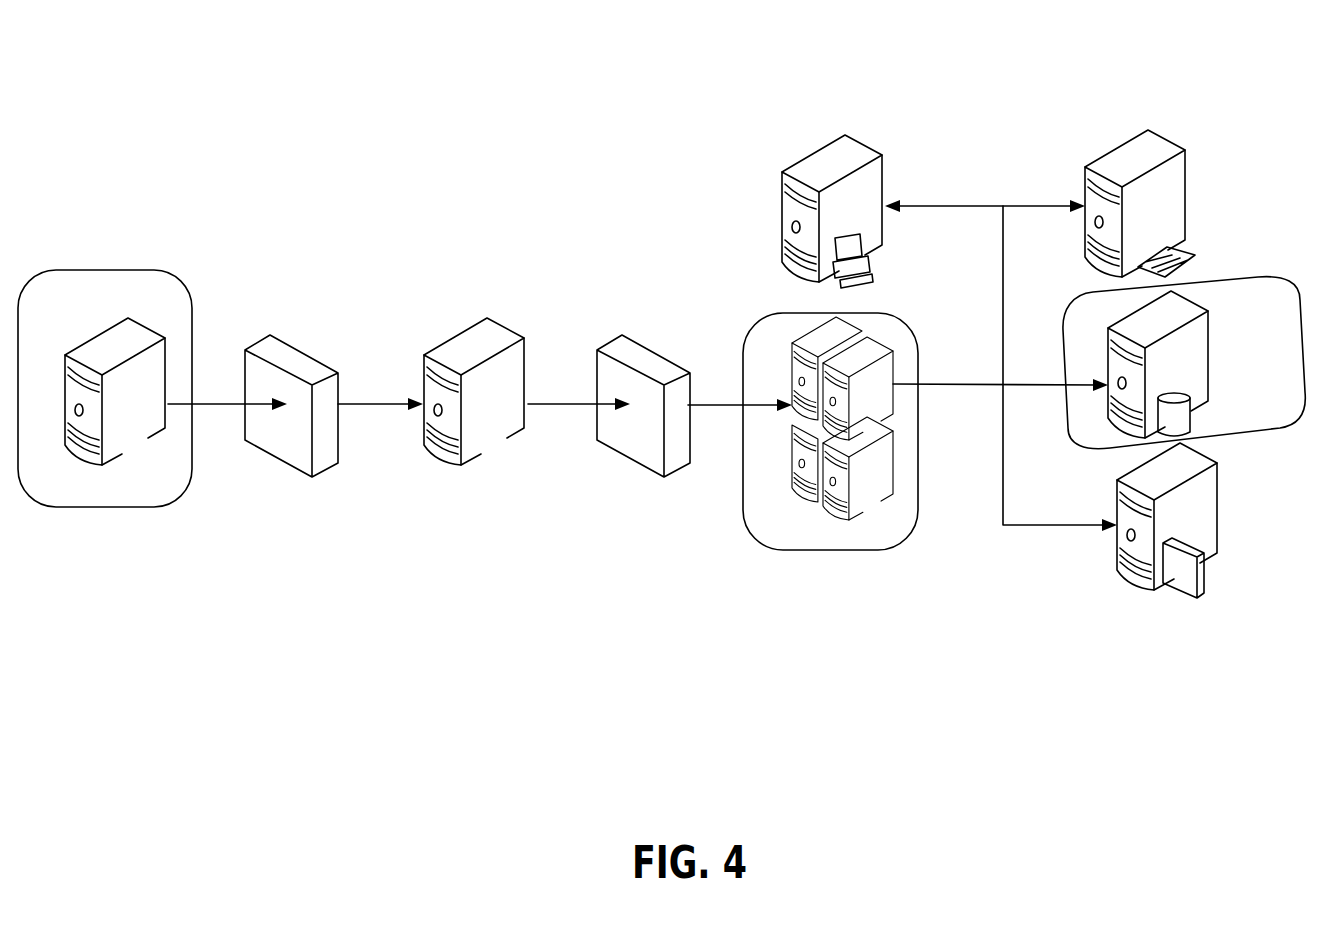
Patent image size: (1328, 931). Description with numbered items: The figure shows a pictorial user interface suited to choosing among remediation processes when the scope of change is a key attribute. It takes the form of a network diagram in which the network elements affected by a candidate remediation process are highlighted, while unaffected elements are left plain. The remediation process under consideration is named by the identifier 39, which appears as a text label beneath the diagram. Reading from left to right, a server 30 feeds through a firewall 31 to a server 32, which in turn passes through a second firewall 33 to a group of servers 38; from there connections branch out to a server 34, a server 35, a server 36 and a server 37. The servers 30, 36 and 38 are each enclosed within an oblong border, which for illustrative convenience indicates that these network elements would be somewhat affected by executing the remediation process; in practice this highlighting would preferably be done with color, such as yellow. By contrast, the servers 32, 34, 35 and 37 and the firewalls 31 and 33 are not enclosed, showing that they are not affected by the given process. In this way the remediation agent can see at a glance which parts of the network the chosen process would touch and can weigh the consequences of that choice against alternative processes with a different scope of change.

The server 30 is at (128, 332).
The firewall 31 is at (290, 353).
The server 32 is at (470, 340).
The firewall 33 is at (623, 342).
The server 34 is at (842, 147).
The server 35 is at (1152, 148).
The server 36 is at (1187, 312).
The server 37 is at (1138, 577).
The server 38 is at (843, 500).
The identifier 39 is at (357, 580).